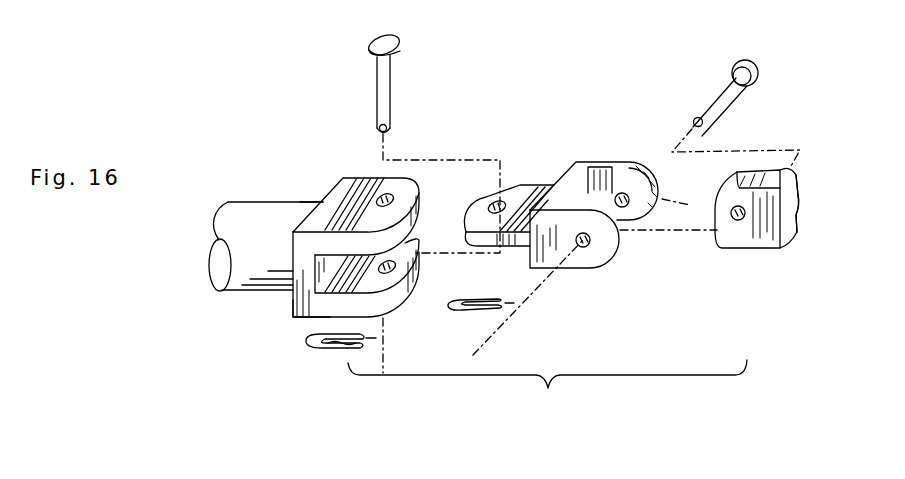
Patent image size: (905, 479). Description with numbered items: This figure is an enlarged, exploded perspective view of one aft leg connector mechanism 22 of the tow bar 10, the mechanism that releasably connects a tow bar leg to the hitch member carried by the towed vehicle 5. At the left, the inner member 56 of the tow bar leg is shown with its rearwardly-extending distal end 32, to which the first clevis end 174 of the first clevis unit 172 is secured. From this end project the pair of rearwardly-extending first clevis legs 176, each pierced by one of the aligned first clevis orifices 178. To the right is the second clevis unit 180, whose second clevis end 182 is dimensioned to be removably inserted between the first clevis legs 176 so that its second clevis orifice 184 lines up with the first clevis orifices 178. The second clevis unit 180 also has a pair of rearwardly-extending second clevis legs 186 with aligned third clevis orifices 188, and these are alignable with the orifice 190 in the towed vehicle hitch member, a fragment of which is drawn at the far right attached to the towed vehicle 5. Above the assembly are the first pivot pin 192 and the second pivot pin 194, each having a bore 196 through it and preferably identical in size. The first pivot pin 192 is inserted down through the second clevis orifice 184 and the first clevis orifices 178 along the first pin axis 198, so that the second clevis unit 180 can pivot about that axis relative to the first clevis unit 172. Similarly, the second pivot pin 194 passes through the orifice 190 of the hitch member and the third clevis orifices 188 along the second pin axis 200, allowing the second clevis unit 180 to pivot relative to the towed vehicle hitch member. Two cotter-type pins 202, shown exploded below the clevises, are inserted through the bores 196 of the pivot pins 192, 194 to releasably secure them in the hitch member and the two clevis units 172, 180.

The towed vehicle 5 is at (792, 228).
The tow bar 10 is at (272, 137).
The aft leg connector mechanism 22 is at (391, 394).
The distal end 32 is at (310, 201).
The inner member 56 is at (244, 201).
The first clevis unit 172 is at (300, 313).
The first clevis end 174 is at (338, 189).
The first clevis legs 176 is at (443, 149).
The first clevis orifices 178 is at (393, 242).
The second clevis unit 180 is at (584, 164).
The second clevis end 182 is at (480, 203).
The second clevis orifice 184 is at (515, 190).
The second clevis legs 186 is at (680, 192).
The third clevis orifices 188 is at (624, 212).
The orifice of the towed vehicle hitch member 190 is at (740, 221).
The first pivot pin 192 is at (376, 80).
The second pivot pin 194 is at (723, 87).
The bores 196 is at (378, 126).
The first pin axis 198 is at (386, 330).
The second pin axis 200 is at (497, 332).
The cotter-type pins 202 is at (306, 343).